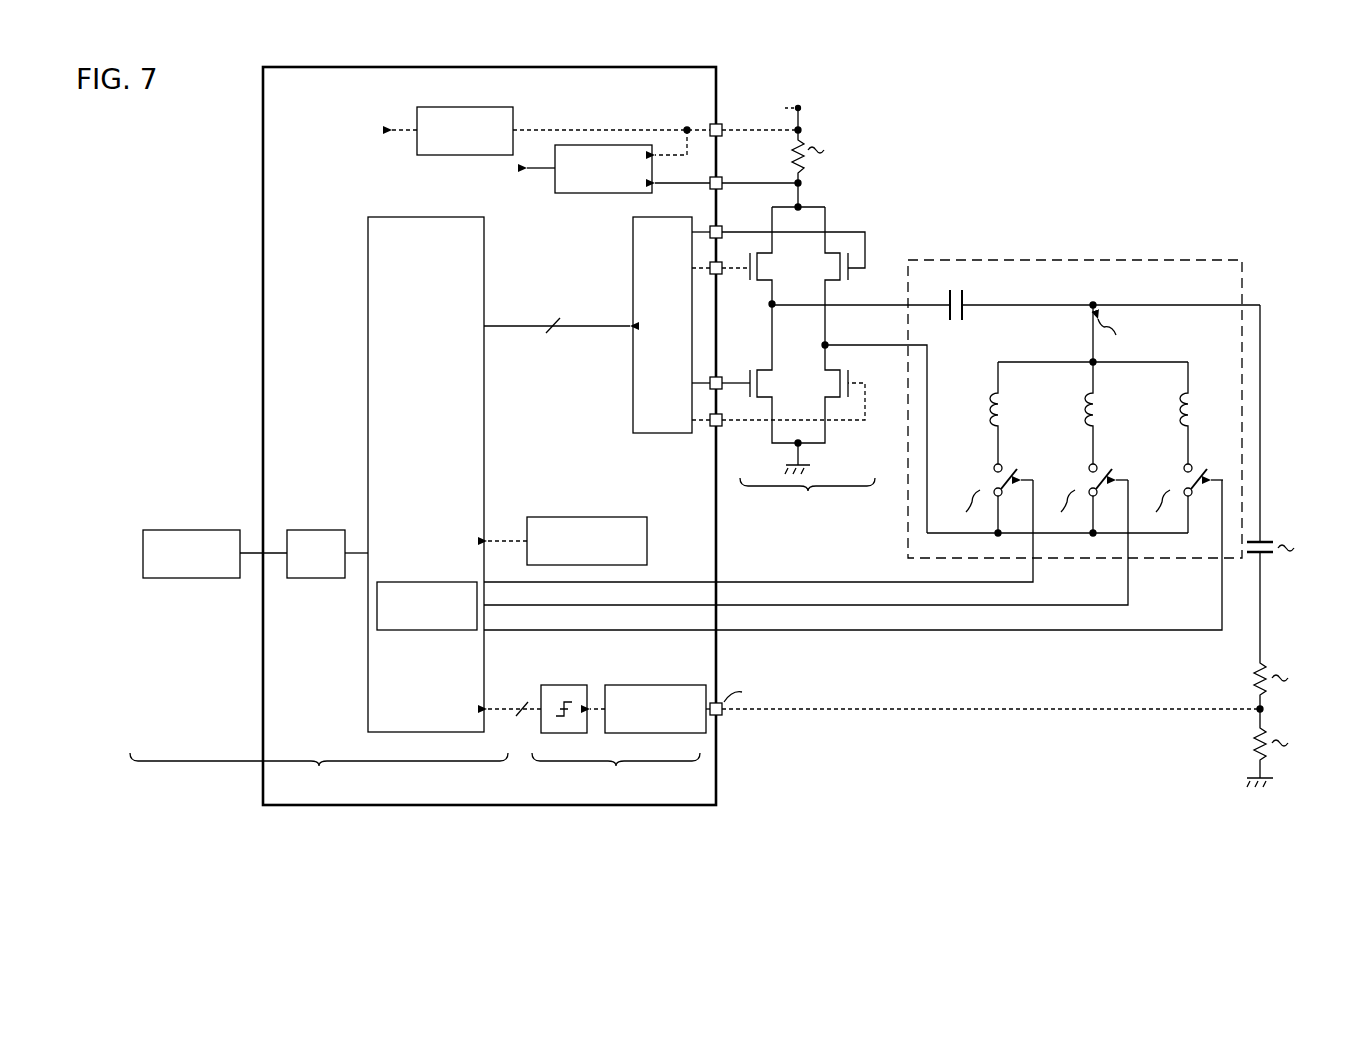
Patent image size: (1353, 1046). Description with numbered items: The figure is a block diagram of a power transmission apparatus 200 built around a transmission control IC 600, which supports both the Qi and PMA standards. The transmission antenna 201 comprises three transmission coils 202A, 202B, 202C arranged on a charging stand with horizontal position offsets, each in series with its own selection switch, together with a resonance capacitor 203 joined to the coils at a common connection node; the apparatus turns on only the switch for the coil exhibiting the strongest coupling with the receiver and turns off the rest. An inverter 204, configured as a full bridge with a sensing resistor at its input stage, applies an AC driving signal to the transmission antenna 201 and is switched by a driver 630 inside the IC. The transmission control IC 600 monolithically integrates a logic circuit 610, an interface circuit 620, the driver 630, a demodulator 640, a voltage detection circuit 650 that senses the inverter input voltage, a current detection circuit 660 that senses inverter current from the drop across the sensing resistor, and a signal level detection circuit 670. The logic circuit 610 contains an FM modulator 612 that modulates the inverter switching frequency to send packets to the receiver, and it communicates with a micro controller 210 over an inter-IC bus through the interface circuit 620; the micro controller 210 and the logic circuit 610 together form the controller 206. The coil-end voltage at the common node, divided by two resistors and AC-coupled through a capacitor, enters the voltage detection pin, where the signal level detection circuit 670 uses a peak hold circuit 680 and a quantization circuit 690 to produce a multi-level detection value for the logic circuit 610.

The power transmission apparatus 200 is at (1257, 99).
The transmission control IC 600 is at (505, 812).
The logic circuit 610 is at (413, 217).
The FM modulator 612 is at (433, 567).
The voltage detection circuit 650 is at (438, 107).
The current detection circuit 660 is at (596, 196).
The driver 630 is at (668, 436).
The demodulator 640 is at (596, 503).
The signal level detection circuit 670 is at (598, 720).
The peak hold circuit 680 is at (660, 668).
The quantization circuit 690 is at (582, 668).
The controller 206 is at (319, 663).
The micro controller 210 is at (190, 580).
The interface circuit 620 is at (314, 580).
The inverter 204 is at (798, 308).
The resonance capacitor 203 is at (958, 322).
The transmission antenna 201 is at (1123, 258).
The transmission coil 202A is at (985, 415).
The transmission coil 202B is at (1080, 415).
The transmission coil 202C is at (1175, 415).